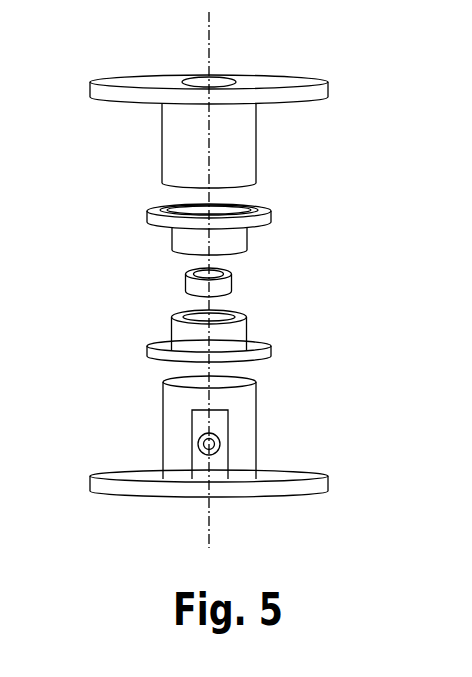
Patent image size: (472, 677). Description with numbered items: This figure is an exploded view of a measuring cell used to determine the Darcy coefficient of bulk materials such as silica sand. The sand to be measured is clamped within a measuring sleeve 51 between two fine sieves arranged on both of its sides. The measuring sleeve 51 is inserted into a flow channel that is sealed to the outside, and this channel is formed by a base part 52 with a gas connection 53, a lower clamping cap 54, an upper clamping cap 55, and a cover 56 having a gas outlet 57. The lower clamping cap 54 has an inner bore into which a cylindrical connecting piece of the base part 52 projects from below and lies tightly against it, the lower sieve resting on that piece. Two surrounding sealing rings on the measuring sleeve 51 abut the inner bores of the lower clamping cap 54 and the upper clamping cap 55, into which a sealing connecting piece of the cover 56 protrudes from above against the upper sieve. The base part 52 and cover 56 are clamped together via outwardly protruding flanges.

The measuring sleeve 51 is at (295, 269).
The base part 52 is at (247, 436).
The gas connection 53 is at (128, 412).
The lower clamping cap 54 is at (275, 329).
The upper clamping cap 55 is at (275, 208).
The cover 56 is at (247, 131).
The gas outlet 57 is at (129, 52).